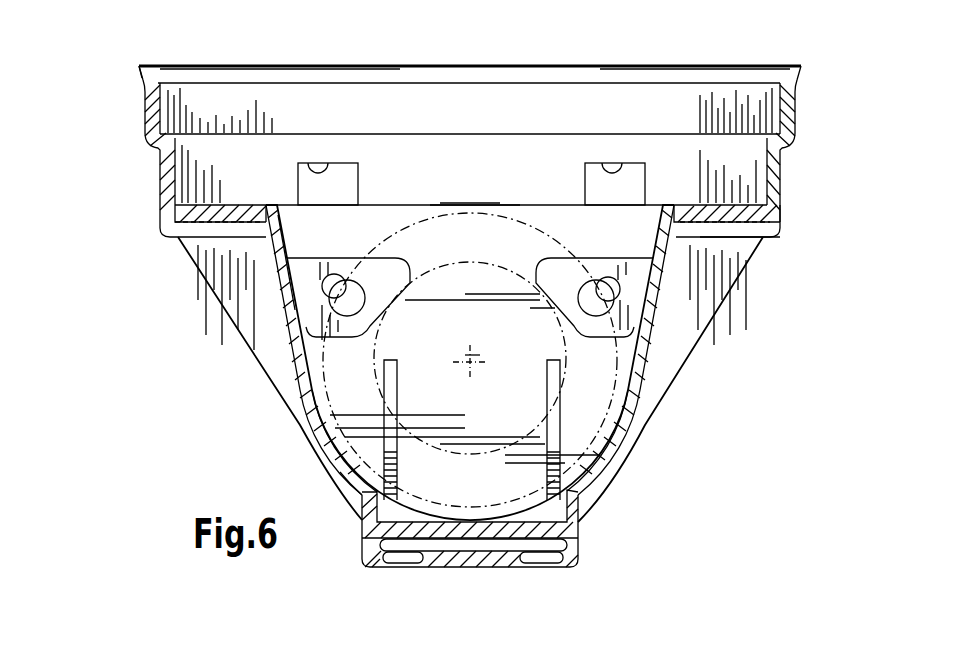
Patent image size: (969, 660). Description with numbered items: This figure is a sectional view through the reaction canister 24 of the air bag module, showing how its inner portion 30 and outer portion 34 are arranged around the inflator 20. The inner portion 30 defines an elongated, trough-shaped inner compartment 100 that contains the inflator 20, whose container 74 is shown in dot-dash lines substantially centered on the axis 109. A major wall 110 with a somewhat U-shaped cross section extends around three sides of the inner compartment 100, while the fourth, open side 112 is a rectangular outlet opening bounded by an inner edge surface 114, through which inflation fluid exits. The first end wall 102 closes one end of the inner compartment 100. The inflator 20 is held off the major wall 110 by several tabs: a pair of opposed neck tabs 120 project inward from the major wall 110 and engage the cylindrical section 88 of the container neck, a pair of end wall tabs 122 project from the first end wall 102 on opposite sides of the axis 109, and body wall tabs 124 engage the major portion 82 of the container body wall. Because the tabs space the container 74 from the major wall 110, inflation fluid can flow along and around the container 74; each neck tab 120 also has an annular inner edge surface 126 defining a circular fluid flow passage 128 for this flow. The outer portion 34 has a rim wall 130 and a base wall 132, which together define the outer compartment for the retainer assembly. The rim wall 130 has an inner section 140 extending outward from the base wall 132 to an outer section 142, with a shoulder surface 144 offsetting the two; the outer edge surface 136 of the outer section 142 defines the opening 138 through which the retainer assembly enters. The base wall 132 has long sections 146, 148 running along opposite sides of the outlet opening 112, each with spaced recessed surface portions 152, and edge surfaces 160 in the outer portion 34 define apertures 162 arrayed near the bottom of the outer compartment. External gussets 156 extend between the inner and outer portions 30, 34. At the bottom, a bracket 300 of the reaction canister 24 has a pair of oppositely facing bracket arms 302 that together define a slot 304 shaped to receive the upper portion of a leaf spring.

The inflator 20 is at (441, 190).
The reaction canister 24 is at (117, 72).
The inner portion 30 is at (287, 333).
The outer portion 34 is at (145, 122).
The container 74 is at (483, 202).
The major portion 82 is at (603, 423).
The cylindrical section 88 is at (449, 263).
The inner compartment 100 is at (460, 339).
The first end wall 102 is at (342, 500).
The axis 109 is at (480, 355).
The major wall 110 is at (292, 384).
The open side 112 is at (387, 203).
The inner edge surface 114 is at (290, 210).
The neck tabs 120 is at (337, 258).
The end wall tabs 122 is at (397, 366).
The body wall tabs 124 is at (326, 468).
The annular inner edge surface 126 is at (327, 287).
The fluid flow passage 128 is at (328, 310).
The rim wall 130 is at (736, 93).
The base wall 132 is at (722, 235).
The outer edge surface 136 is at (222, 65).
The opening 138 is at (367, 65).
The inner section 140 is at (784, 181).
The outer section 142 is at (798, 99).
The shoulder surface 144 is at (768, 136).
The first long section 146 is at (203, 200).
The second long section 148 is at (713, 222).
The recessed surface portions 152 is at (240, 210).
The external gussets 156 is at (296, 414).
The edge surfaces 160 is at (318, 170).
The apertures 162 is at (347, 164).
The bracket 300 is at (360, 540).
The bracket arms 302 is at (393, 560).
The slot 304 is at (472, 568).